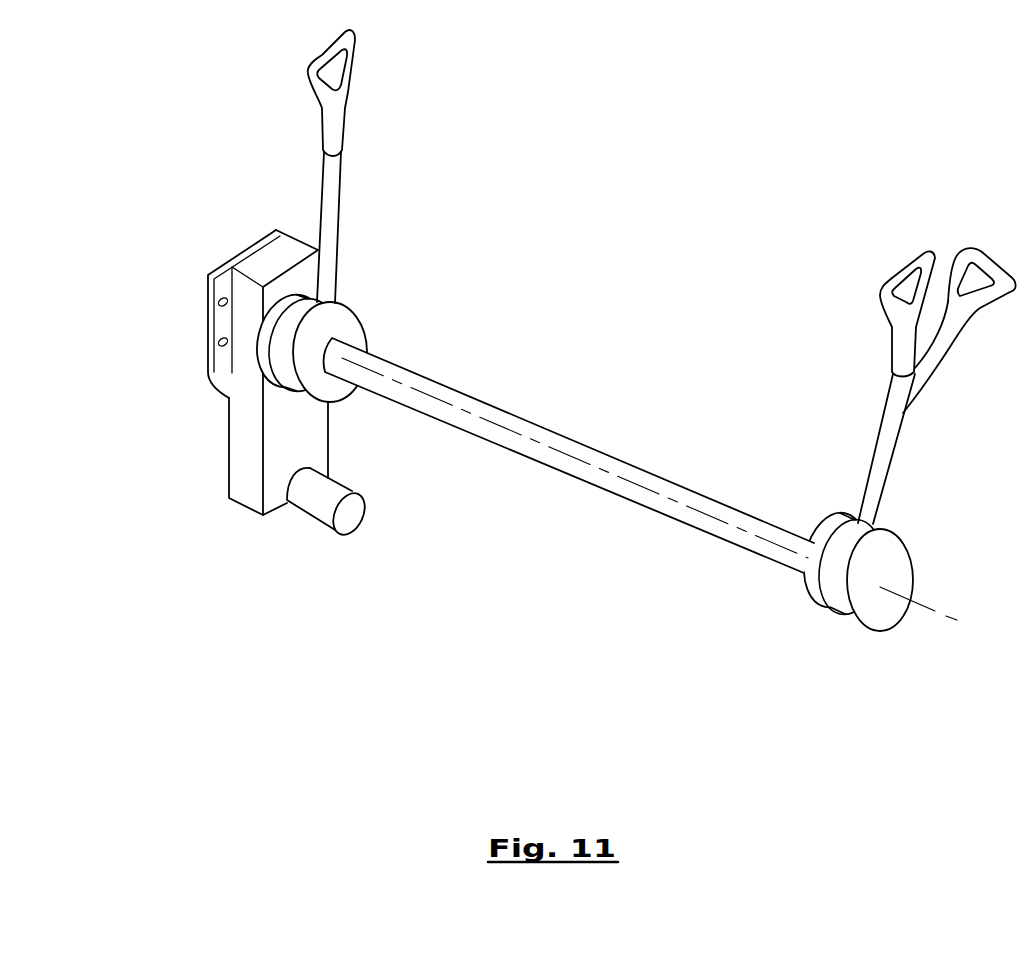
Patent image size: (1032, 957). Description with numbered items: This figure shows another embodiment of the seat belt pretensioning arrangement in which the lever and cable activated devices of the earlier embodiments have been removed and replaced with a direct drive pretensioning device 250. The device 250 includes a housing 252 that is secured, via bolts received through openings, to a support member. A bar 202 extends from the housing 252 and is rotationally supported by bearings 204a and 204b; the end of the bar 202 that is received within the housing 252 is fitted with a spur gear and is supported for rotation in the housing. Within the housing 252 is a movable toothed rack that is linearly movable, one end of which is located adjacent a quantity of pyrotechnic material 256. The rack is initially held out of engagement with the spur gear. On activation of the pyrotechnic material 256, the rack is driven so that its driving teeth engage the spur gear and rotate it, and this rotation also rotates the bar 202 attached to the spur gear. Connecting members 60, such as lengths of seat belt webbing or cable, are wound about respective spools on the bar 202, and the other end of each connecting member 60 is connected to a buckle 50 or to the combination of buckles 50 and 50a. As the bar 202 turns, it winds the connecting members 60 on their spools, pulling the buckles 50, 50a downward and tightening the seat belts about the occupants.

The buckle 50 is at (333, 138).
The buckle 50a is at (890, 352).
The connecting member 60 is at (330, 223).
The bar 202 is at (455, 395).
The bearing 204a is at (348, 328).
The bearing 204b is at (890, 567).
The direct drive pretensioning device 250 is at (245, 433).
The housing 252 is at (260, 257).
The pyrotechnic material 256 is at (318, 497).